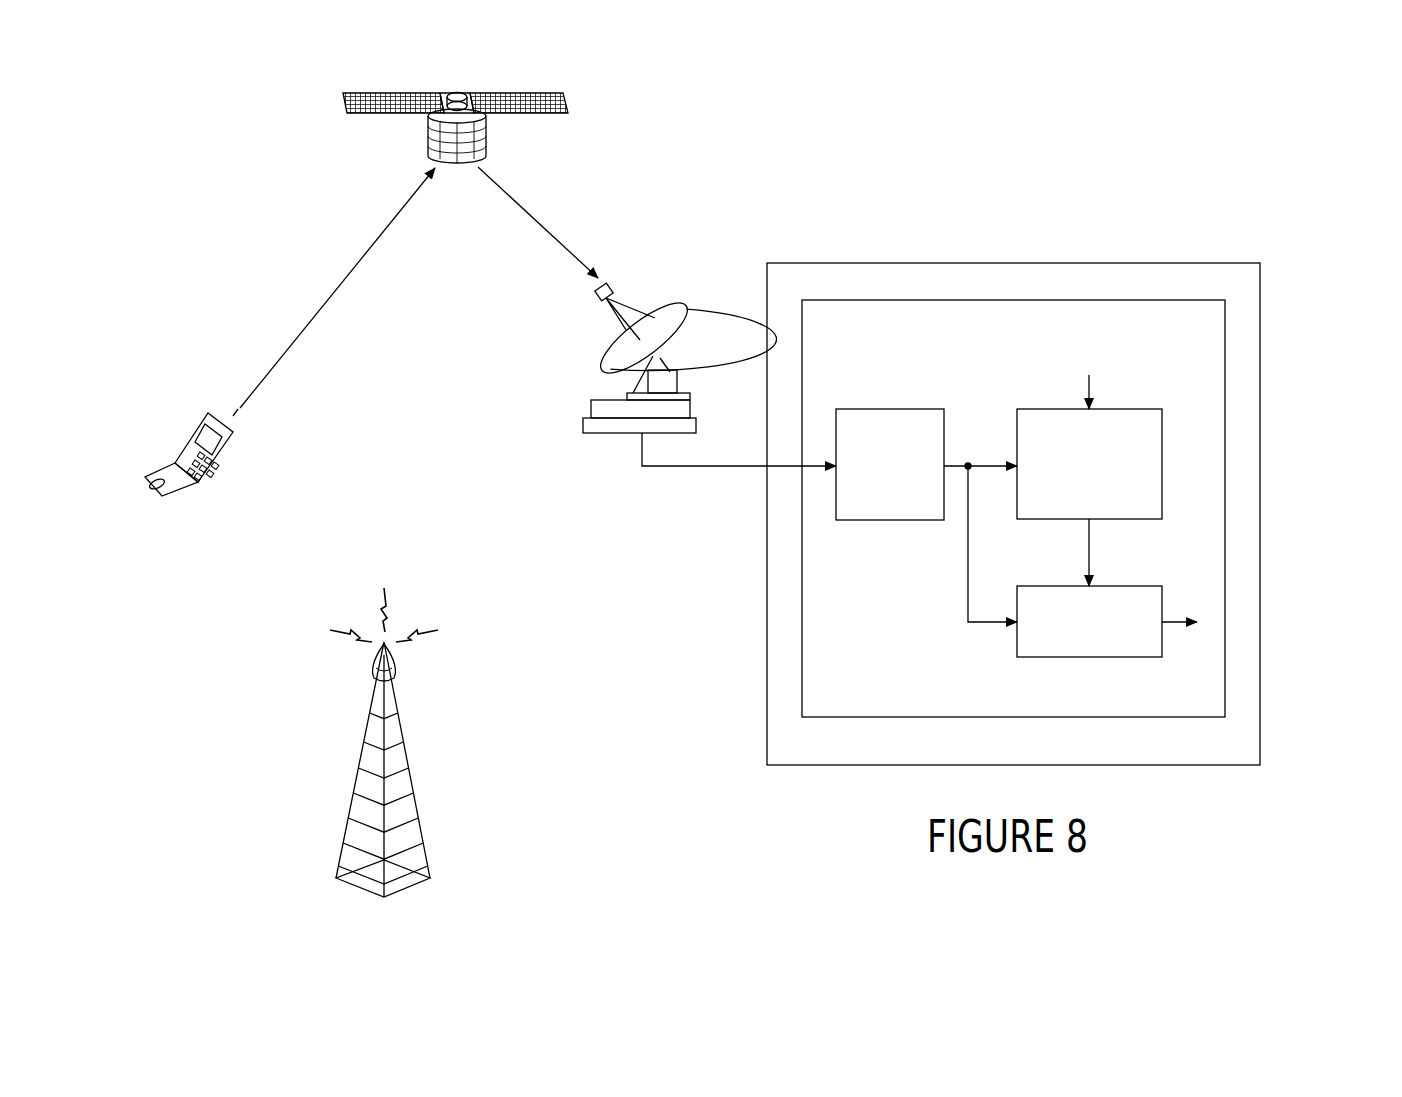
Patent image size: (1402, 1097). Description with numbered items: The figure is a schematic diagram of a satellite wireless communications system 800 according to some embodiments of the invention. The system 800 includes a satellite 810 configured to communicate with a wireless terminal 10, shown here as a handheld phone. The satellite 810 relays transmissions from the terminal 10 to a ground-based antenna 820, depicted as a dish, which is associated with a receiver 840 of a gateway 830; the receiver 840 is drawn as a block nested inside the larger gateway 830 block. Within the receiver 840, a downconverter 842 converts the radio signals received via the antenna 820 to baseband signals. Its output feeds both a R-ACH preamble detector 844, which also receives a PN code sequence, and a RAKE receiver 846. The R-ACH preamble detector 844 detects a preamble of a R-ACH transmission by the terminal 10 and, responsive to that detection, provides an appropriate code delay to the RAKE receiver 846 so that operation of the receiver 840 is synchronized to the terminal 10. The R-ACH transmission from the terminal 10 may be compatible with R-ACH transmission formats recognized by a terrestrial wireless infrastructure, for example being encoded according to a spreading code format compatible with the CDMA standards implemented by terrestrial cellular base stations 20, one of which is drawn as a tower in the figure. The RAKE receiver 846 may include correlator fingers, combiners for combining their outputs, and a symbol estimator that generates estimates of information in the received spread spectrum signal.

The satellite wireless communications system 800 is at (1264, 176).
The satellite 810 is at (460, 96).
The ground-based antenna 820 is at (610, 360).
The gateway 830 is at (1090, 263).
The receiver 840 is at (1135, 300).
The downconverter 842 is at (890, 409).
The R-ACH preamble detector 844 is at (1130, 409).
The RAKE receiver 846 is at (1115, 657).
The wireless terminal 10 is at (198, 426).
The terrestrial cellular base station 20 is at (405, 746).